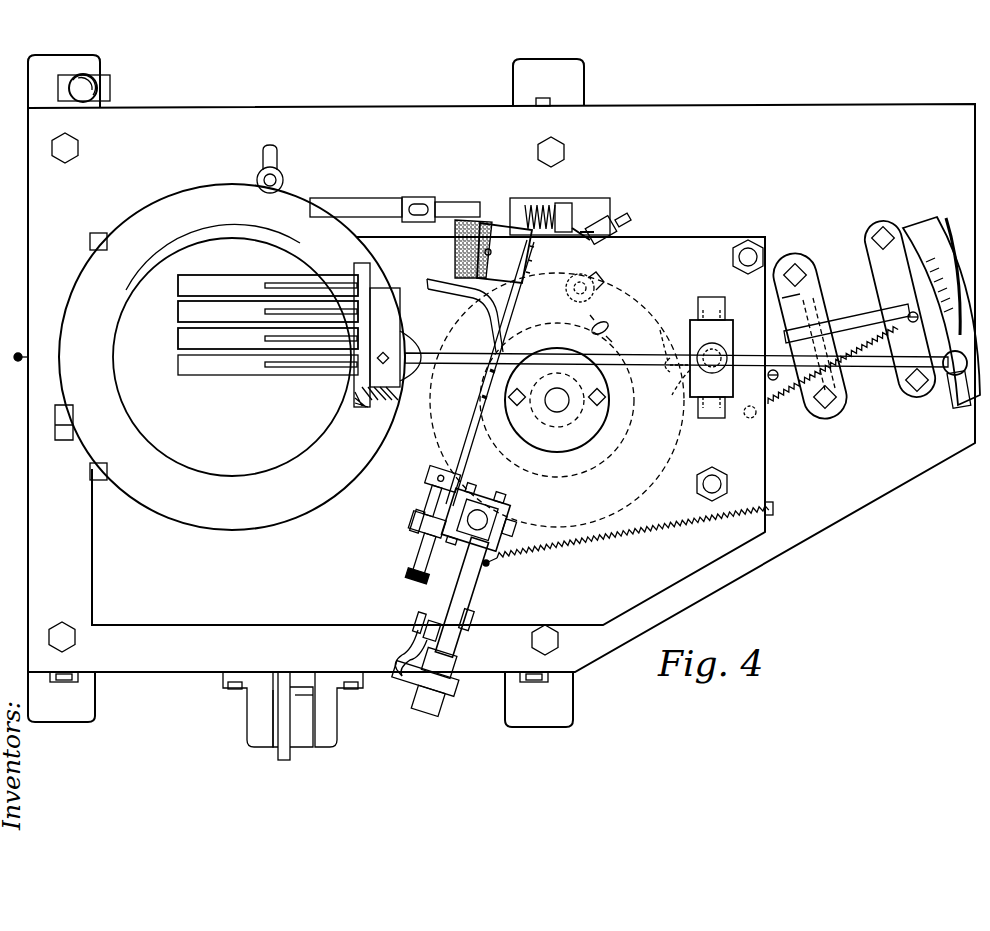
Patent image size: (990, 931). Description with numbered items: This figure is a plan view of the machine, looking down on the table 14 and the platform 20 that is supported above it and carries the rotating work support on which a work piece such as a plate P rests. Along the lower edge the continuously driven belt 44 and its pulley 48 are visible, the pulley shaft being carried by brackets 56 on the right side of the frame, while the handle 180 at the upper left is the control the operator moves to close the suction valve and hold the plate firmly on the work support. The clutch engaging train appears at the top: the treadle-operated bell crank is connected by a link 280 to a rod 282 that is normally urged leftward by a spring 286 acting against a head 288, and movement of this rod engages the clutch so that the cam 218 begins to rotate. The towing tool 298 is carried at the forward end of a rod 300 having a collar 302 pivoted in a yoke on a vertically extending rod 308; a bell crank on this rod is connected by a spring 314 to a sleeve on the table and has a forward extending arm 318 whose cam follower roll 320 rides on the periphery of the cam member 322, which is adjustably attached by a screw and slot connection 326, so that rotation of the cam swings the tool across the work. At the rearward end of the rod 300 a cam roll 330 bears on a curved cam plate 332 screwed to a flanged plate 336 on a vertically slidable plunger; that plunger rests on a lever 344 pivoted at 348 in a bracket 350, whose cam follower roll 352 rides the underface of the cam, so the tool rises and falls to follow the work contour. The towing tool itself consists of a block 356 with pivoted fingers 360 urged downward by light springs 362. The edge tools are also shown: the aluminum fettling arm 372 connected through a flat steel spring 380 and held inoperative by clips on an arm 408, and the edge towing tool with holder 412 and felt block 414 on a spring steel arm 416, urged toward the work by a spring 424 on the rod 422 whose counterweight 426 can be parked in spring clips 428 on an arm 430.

The table 14 is at (172, 662).
The platform 20 is at (200, 592).
The belt 44 is at (281, 752).
The pulley 48 is at (306, 750).
The brackets 56 is at (252, 742).
The handle 180 is at (90, 82).
The plate P is at (167, 504).
The cam 218 is at (434, 430).
The link 280 is at (358, 208).
The rod 282 is at (418, 204).
The spring 286 is at (540, 212).
The head 288 is at (566, 218).
The towing tool 298 is at (217, 258).
The rod 300 is at (522, 353).
The collar 302 is at (733, 330).
The vertically extending rod 308 is at (662, 328).
The spring 314 is at (795, 400).
The forward extending arm 318 is at (640, 300).
The cam follower roll 320 is at (590, 283).
The cam member 322 is at (548, 300).
The screw and slot connection 326 is at (592, 328).
The cam roll 330 is at (946, 380).
The cam plate 332 is at (953, 280).
The flanged plate 336 is at (936, 220).
The lever 344 is at (838, 322).
The pivot 348 is at (822, 300).
The bracket 350 is at (808, 270).
The cam follower roll 352 is at (683, 396).
The block 356 is at (400, 274).
The fingers 360 is at (178, 364).
The light springs 362 is at (298, 375).
The arm 372 is at (455, 283).
The flat steel spring 380 is at (484, 366).
The arm 408 is at (418, 622).
The holder 412 is at (508, 236).
The felt block 414 is at (468, 220).
The spring steel arm 416 is at (484, 406).
The rod 422 is at (463, 588).
The spring 424 is at (646, 540).
The counterweight 426 is at (440, 707).
The spring clips 428 is at (412, 693).
The arm 430 is at (402, 654).